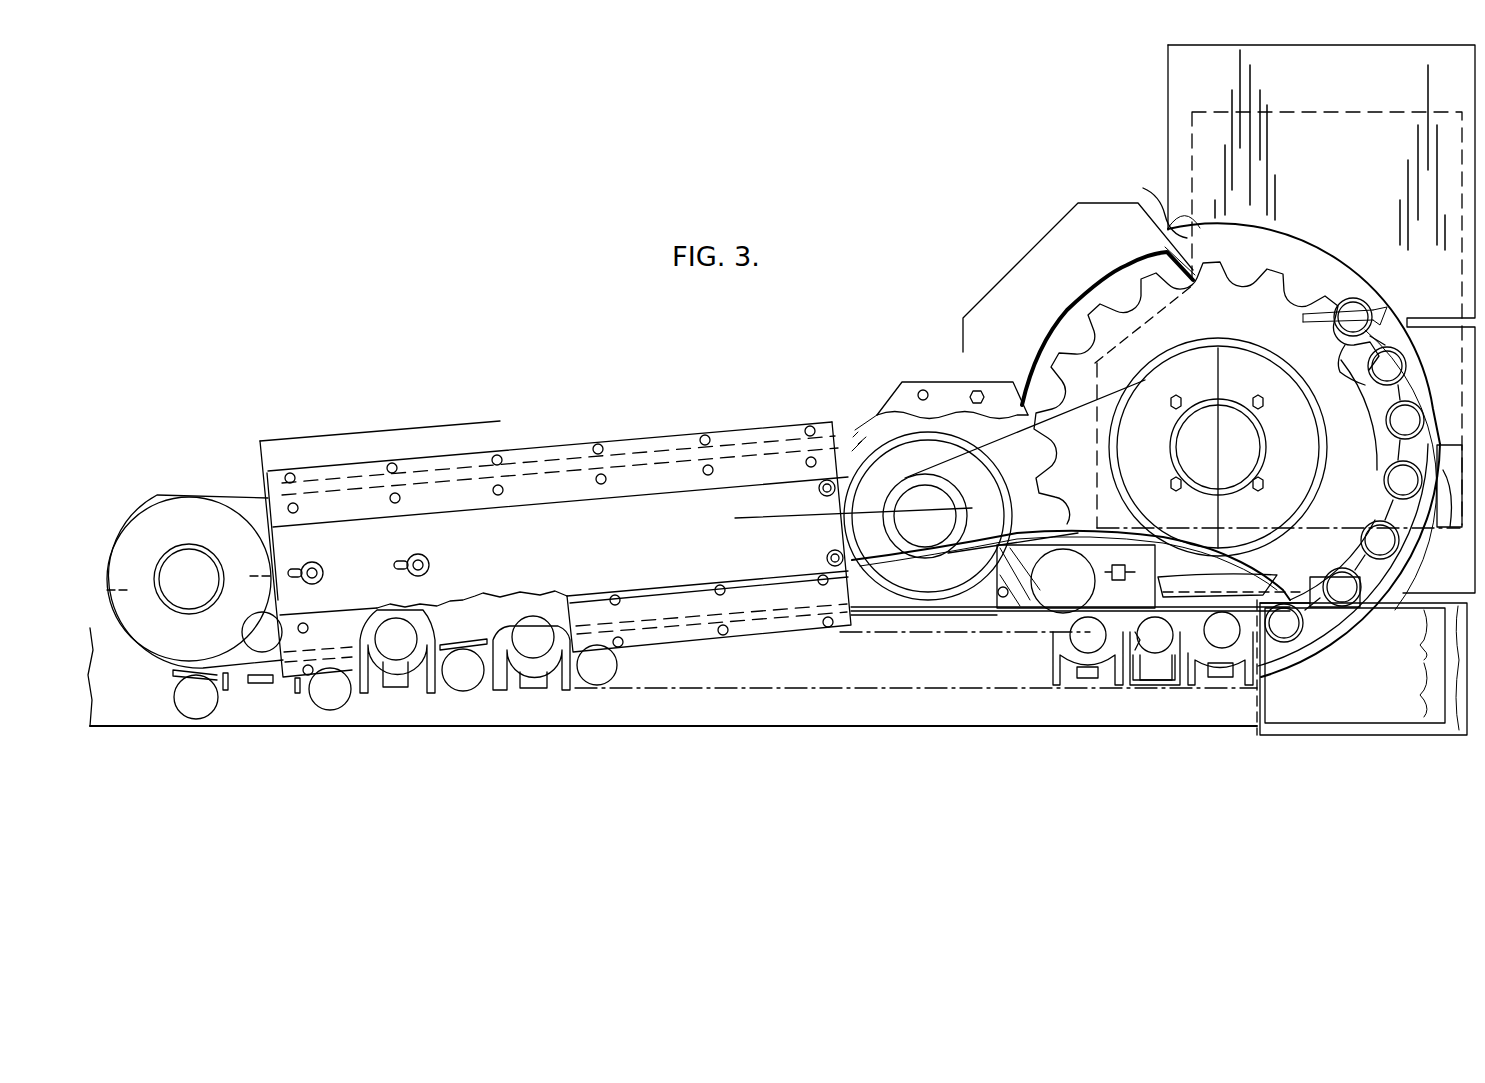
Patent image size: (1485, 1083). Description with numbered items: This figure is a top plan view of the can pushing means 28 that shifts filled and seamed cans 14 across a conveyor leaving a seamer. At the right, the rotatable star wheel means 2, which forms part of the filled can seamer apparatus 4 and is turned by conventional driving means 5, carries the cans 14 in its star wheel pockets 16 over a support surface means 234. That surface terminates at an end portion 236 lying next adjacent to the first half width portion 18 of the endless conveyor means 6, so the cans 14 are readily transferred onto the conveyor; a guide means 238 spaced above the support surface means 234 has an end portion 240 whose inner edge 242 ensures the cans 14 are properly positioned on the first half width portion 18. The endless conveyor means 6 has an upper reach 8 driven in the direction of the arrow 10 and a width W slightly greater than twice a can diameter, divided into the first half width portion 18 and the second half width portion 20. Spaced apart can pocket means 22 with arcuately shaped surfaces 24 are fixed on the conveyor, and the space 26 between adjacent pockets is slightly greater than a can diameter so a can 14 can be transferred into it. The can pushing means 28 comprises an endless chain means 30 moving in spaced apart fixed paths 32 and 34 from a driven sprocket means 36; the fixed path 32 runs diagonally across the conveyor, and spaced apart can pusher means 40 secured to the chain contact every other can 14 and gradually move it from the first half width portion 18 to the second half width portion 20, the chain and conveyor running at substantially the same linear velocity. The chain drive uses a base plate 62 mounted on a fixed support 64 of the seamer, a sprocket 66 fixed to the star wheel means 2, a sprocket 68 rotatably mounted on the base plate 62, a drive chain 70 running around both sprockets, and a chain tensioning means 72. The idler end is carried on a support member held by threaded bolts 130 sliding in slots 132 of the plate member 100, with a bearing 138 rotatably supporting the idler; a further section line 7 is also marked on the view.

The upper reach 8 is at (882, 720).
The arrow 10 is at (1072, 738).
The filled and seamed cans 14 is at (1408, 337).
The star wheel pockets 16 is at (1340, 387).
The first half width portion 18 is at (1362, 667).
The second half width portion 20 is at (1401, 688).
The can pocket means 22 is at (1088, 678).
The arcuately shaped surfaces 24 is at (1067, 645).
The space 26 is at (1138, 683).
The can pushing means 28 is at (603, 437).
The endless chain means 30 is at (220, 497).
The fixed path 32 is at (690, 656).
The fixed path 34 is at (501, 444).
The driven sprocket means 36 is at (928, 443).
The can pusher means 40 is at (450, 640).
The base plate 62 is at (877, 410).
The fixed support 64 is at (1040, 242).
The sprocket 66 is at (1194, 363).
The sprocket 68 is at (908, 500).
The drive chain 70 is at (1095, 404).
The chain tensioning means 72 is at (1185, 571).
The plate member 100 is at (540, 569).
The threaded bolts 130 is at (314, 584).
The slots 132 is at (297, 567).
The bearing 138 is at (152, 520).
The support surface means 234 is at (1387, 316).
The end portion 236 is at (1312, 605).
The guide means 238 is at (1459, 505).
The end portion 240 is at (1135, 708).
The inner edge 242 is at (1153, 687).
The rotatable star wheel means 2 is at (1107, 311).
The filled can seamer apparatus 4 is at (762, 536).
The driving means 5 is at (467, 763).
The endless conveyor means 6 is at (471, 440).
The section line 7 is at (1328, 587).
The width W is at (1443, 752).